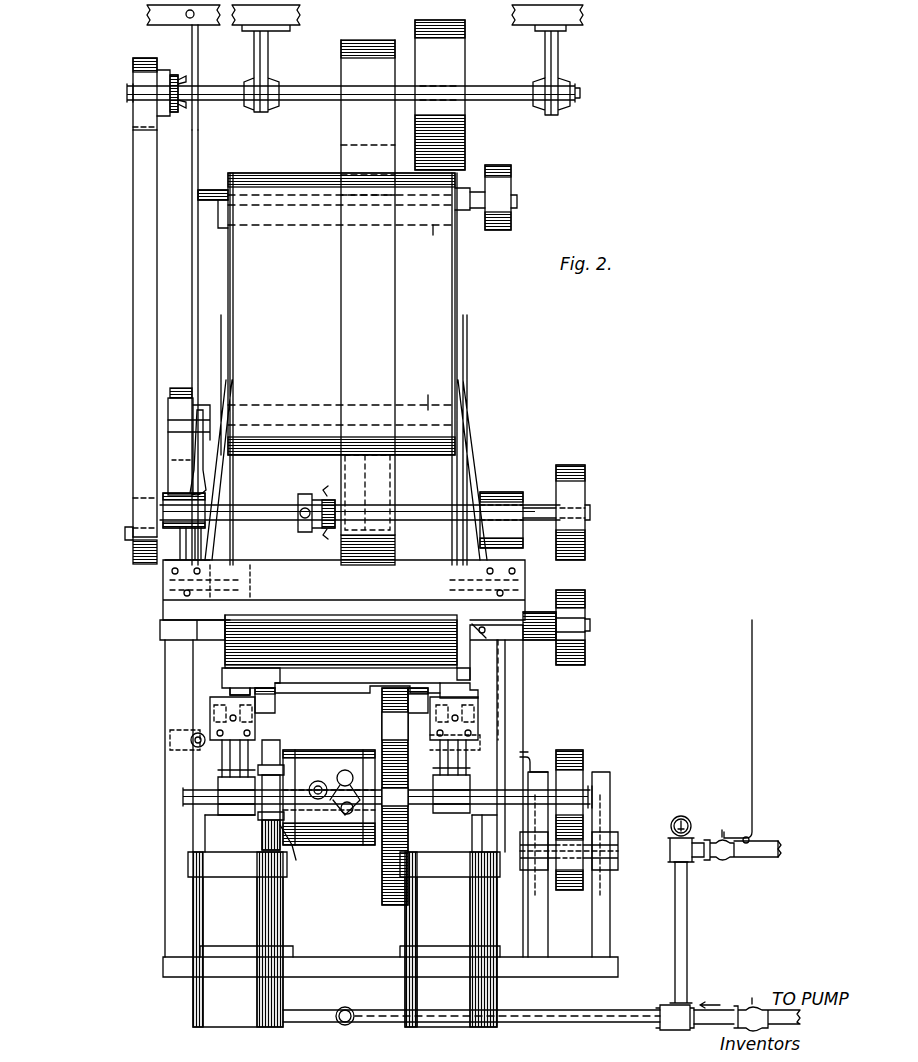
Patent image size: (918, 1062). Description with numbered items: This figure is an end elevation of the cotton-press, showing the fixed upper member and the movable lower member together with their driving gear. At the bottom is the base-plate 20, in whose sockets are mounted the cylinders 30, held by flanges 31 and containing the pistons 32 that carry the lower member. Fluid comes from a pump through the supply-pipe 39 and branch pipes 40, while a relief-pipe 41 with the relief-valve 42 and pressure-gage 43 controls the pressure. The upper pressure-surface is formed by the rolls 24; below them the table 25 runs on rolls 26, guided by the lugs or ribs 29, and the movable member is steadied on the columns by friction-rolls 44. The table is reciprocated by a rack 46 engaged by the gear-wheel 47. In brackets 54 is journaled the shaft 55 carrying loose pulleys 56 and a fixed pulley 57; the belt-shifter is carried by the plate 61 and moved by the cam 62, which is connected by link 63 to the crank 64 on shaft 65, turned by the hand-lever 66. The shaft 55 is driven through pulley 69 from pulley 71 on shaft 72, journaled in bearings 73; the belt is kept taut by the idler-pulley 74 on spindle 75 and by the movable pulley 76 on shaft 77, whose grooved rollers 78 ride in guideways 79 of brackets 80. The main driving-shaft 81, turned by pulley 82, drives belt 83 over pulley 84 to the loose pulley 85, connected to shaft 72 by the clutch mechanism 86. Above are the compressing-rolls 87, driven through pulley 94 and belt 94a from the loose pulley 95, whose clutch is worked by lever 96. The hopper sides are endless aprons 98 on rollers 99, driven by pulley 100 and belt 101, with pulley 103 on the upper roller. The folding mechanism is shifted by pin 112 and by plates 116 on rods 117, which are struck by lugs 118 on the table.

The base-plate 20 is at (342, 966).
The rolls 24 is at (308, 636).
The table 25 is at (243, 682).
The rolls 26 is at (344, 701).
The lugs or ribs 29 is at (232, 692).
The cylinders 30 is at (344, 939).
The flanges 31 is at (282, 957).
The pistons 32 is at (351, 835).
The supply-pipe 39 is at (345, 1026).
The branch pipes 40 is at (310, 1024).
The relief-pipe 41 is at (686, 936).
The relief-valve 42 is at (716, 860).
The pressure-gage 43 is at (685, 824).
The friction-rolls 44 is at (210, 733).
The rack 46 is at (392, 693).
The gear-wheel 47 is at (382, 880).
The brackets 54 is at (218, 772).
The shaft 55 is at (183, 797).
The loose pulleys 56 is at (331, 811).
The fixed pulley 57 is at (329, 811).
The plate 61 is at (322, 752).
The belt-shifter cam 62 is at (352, 768).
The link 63 is at (296, 860).
The crank 64 is at (266, 850).
The shaft 65 is at (280, 780).
The hand-lever 66 is at (190, 752).
The pulley 69 is at (578, 752).
The pulley 71 is at (578, 490).
The shaft 72 is at (590, 514).
The bearings 73 is at (505, 498).
The idler-pulley 74 is at (585, 654).
The spindle 75 is at (590, 628).
The movable pulley 76 is at (568, 890).
The shaft 77 is at (618, 855).
The loose grooved rollers 78 is at (527, 845).
The guideways 79 is at (545, 885).
The brackets 80 is at (545, 926).
The main driving-shaft 81 is at (296, 96).
The pulley 82 is at (440, 95).
The belt 83 is at (368, 357).
The pulley 84 is at (366, 40).
The loose pulley 85 is at (395, 500).
The clutch mechanism 86 is at (328, 492).
The compressing-rolls 87 is at (360, 527).
The pulley 94 is at (125, 514).
The belt 94a is at (133, 237).
The loose pulley 95 is at (133, 76).
The lever 96 is at (195, 475).
The endless aprons 98 is at (334, 314).
The rollers 99 is at (435, 317).
The pulley 100 is at (170, 394).
The belt 101 is at (180, 415).
The pulley 103 is at (511, 185).
The pin 112 is at (482, 640).
The plates 116 is at (482, 712).
The rods 117 is at (500, 645).
The lugs 118 is at (472, 682).